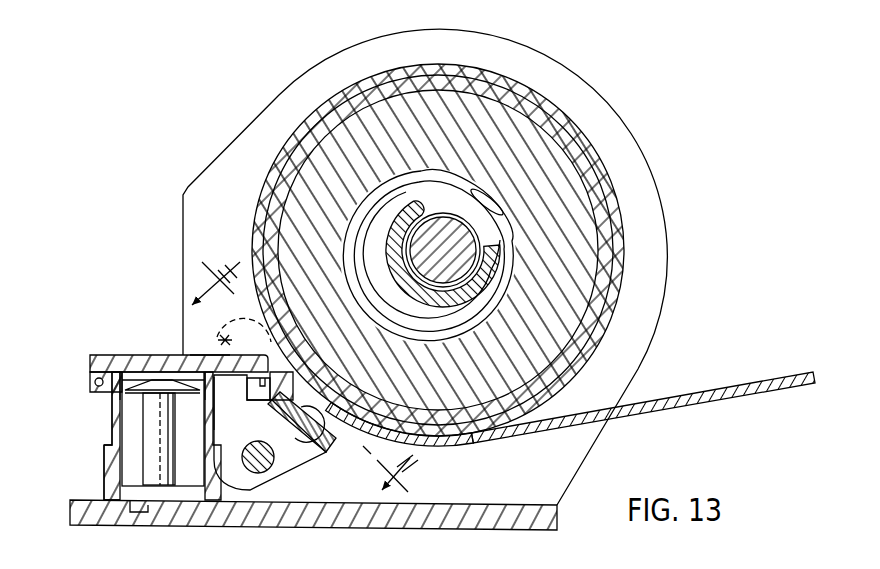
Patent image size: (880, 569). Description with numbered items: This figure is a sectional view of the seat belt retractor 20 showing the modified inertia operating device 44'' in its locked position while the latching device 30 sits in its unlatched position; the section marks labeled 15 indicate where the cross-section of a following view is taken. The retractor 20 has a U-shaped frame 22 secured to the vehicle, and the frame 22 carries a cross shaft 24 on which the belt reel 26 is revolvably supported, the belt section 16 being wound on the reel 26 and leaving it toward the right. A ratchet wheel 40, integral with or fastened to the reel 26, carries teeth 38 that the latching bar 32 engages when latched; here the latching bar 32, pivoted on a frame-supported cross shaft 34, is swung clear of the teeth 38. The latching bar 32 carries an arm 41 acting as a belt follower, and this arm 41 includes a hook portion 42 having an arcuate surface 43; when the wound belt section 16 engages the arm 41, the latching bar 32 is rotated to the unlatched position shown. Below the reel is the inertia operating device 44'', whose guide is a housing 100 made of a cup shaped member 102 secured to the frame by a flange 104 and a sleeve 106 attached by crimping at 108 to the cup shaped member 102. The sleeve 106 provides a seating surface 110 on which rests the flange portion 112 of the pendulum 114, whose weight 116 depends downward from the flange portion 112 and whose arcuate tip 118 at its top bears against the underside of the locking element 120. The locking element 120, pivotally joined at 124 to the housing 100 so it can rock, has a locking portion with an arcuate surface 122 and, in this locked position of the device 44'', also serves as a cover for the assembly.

The U-shaped frame 22 is at (274, 93).
The retractor 20 is at (625, 264).
The tooth 38 is at (418, 66).
The ratchet wheel 40 is at (516, 108).
The cross shaft 24 is at (441, 217).
The belt reel 26 is at (511, 238).
The pendulum 114 is at (141, 471).
The belt section 16 is at (725, 380).
The cup shaped member 102 is at (78, 496).
The flange 104 is at (146, 524).
The seating surface 110 is at (112, 370).
The locking element 120 is at (198, 355).
The pivot 124 is at (90, 374).
The sleeve 106 is at (112, 412).
The crimp attachment 108 is at (112, 445).
The housing 100 is at (109, 402).
The inertia operating device 44'' is at (80, 472).
The weight 116 is at (183, 470).
The arcuate tip 118 is at (168, 355).
The flange portion 112 is at (147, 378).
The latching device 30 is at (289, 484).
The hook portion 42 is at (270, 392).
The cross shaft 34 is at (252, 474).
The latching bar 32 is at (312, 458).
The arcuate surface 43 is at (250, 380).
The arcuate surface 122 is at (282, 375).
The arm 41 is at (214, 331).
The section line 15- 15 is at (322, 352).